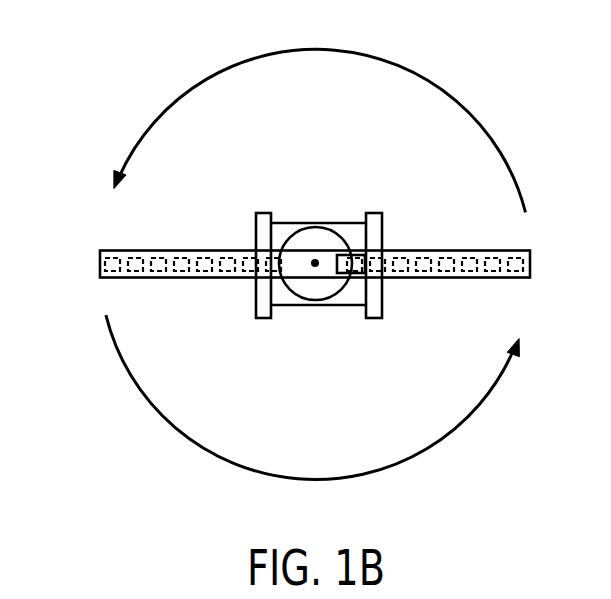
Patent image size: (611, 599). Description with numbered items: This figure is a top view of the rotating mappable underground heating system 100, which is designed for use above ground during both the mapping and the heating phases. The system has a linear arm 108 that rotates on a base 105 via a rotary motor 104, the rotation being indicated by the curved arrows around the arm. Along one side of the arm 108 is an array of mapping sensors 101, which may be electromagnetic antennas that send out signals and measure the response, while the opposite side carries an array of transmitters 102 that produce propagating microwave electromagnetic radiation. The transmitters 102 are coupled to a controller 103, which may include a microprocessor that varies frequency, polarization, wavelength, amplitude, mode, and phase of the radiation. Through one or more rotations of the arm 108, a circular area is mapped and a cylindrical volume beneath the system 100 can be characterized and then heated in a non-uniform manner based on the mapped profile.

The mappable underground heating system 100 is at (483, 95).
The mapping sensors 101 is at (117, 258).
The transmitters 102 is at (467, 257).
The controller 103 is at (340, 255).
The rotary motor 104 is at (305, 287).
The base 105 is at (263, 218).
The arm 108 is at (100, 265).